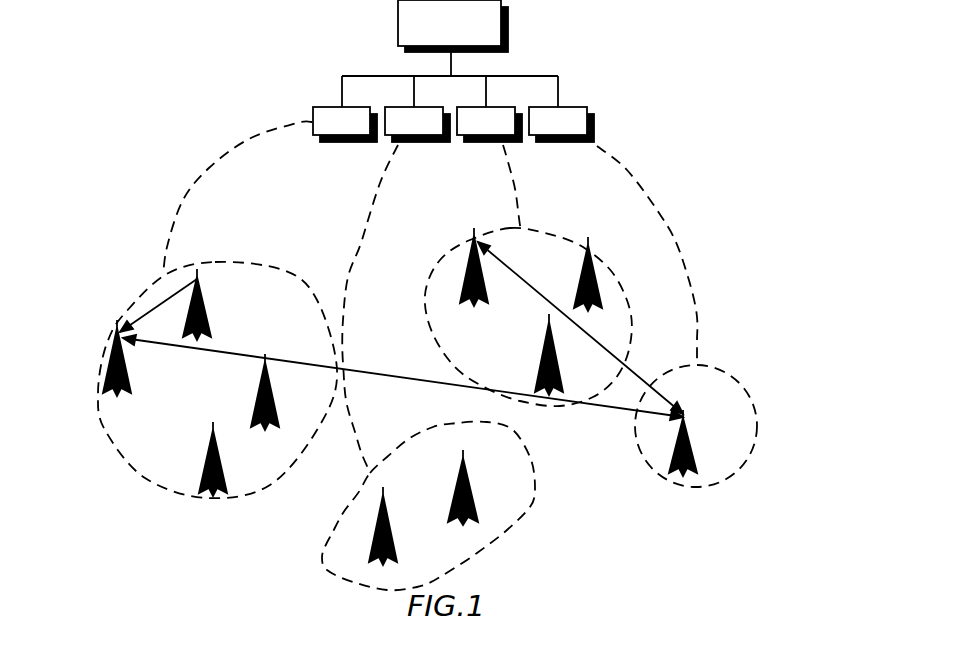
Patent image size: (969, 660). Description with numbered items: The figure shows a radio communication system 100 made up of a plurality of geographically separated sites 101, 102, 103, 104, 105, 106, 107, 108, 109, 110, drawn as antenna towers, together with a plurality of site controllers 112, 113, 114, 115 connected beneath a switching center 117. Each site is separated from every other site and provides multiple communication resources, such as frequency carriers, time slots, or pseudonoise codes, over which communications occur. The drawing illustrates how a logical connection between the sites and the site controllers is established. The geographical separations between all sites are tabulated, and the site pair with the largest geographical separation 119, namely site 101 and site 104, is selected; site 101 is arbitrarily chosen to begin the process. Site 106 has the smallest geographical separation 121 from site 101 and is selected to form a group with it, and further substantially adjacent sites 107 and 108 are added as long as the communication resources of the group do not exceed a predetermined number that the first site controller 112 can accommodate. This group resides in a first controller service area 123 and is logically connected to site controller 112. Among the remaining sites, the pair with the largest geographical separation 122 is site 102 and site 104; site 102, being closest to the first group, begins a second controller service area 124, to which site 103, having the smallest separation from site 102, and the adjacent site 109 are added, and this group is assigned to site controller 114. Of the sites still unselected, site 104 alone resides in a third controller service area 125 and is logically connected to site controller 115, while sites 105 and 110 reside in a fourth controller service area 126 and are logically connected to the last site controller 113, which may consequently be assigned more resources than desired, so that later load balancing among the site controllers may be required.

The radio communication system 100 is at (128, 164).
The site 101 is at (112, 335).
The site 102 is at (471, 232).
The site 103 is at (588, 243).
The site 104 is at (686, 412).
The site 105 is at (386, 506).
The site 106 is at (199, 277).
The site 107 is at (266, 360).
The site 108 is at (212, 427).
The site 109 is at (548, 322).
The site 110 is at (466, 460).
The site controller 112 is at (312, 107).
The site controller 113 is at (434, 136).
The site controller 114 is at (481, 137).
The site controller 115 is at (587, 107).
The switching center 117 is at (505, 2).
The geographical separation 119 is at (418, 380).
The geographical separation 121 is at (155, 303).
The geographical separation 122 is at (548, 302).
The first controller service area 123 is at (270, 264).
The second controller service area 124 is at (622, 293).
The third controller service area 125 is at (710, 365).
The fourth controller service area 126 is at (451, 424).